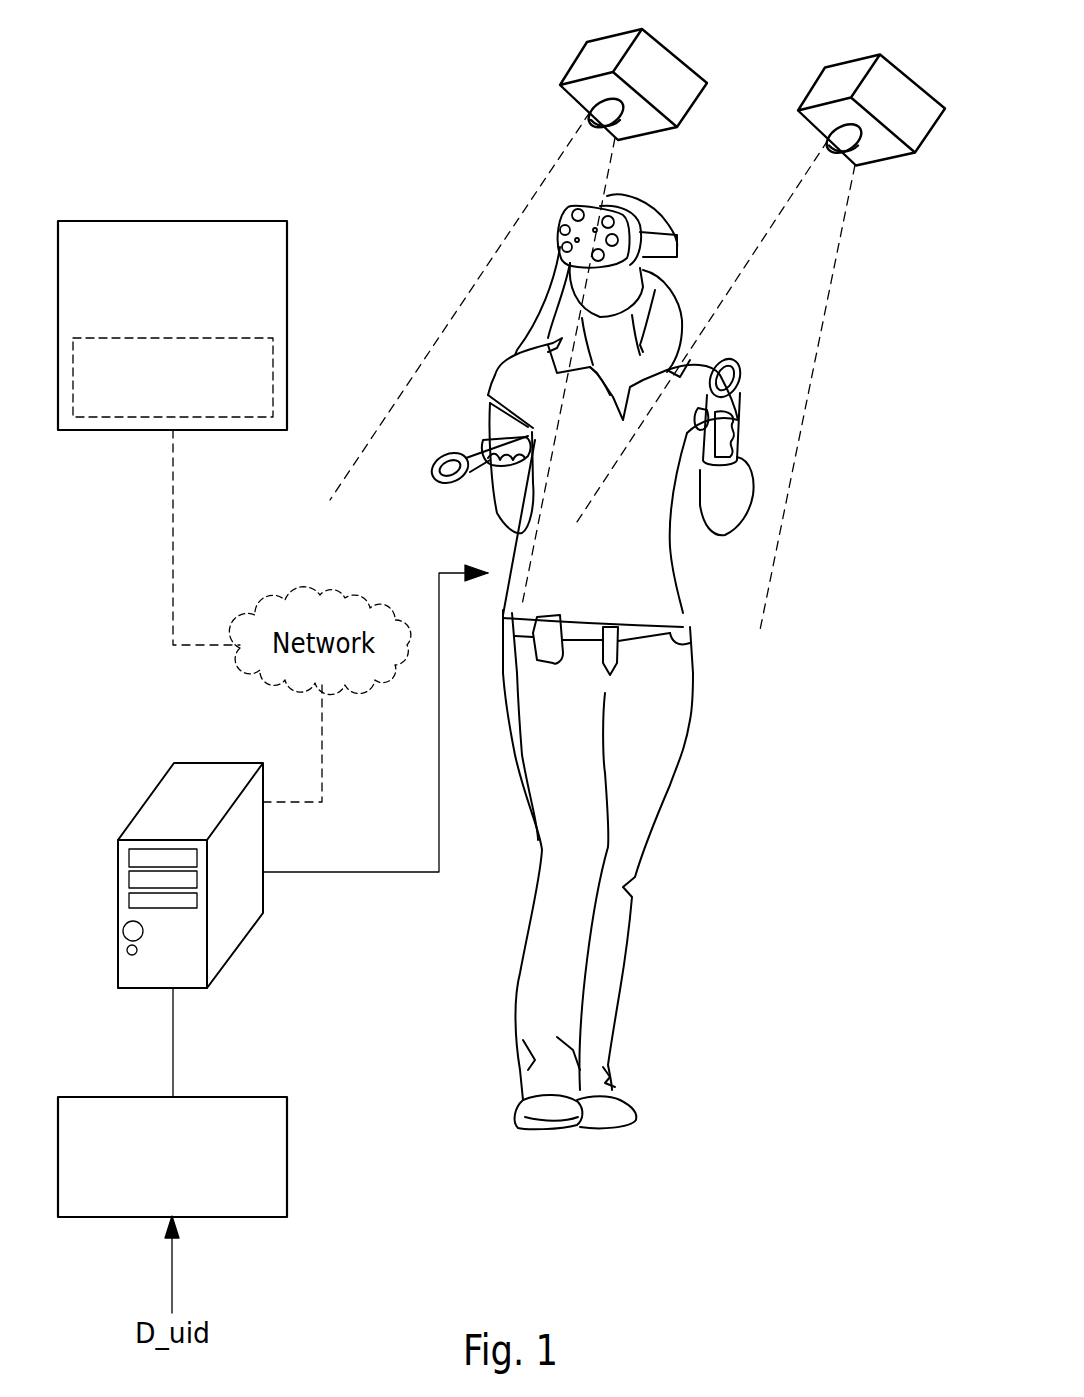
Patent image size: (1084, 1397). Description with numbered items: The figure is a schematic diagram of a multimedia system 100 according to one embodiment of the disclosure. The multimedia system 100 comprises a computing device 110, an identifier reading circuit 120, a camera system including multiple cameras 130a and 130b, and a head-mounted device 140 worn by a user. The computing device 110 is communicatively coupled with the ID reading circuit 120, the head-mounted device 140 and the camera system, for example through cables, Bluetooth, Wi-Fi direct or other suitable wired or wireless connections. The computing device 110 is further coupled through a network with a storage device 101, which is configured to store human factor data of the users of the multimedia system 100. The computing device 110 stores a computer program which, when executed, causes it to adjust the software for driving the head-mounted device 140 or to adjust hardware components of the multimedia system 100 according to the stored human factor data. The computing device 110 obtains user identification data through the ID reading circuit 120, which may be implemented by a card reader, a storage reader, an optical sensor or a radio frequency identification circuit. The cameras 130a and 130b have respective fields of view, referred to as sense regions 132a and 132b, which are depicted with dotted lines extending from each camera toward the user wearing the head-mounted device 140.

The multimedia system 100 is at (762, 1137).
The storage device 101 is at (195, 311).
The computing device 110 is at (245, 913).
The ID reading circuit 120 is at (195, 1187).
The camera 130a is at (586, 60).
The camera 130b is at (824, 86).
The sense region 132a is at (466, 292).
The sense region 132b is at (817, 355).
The head-mounted device 140 is at (630, 227).